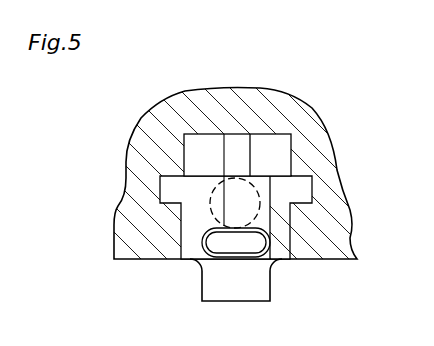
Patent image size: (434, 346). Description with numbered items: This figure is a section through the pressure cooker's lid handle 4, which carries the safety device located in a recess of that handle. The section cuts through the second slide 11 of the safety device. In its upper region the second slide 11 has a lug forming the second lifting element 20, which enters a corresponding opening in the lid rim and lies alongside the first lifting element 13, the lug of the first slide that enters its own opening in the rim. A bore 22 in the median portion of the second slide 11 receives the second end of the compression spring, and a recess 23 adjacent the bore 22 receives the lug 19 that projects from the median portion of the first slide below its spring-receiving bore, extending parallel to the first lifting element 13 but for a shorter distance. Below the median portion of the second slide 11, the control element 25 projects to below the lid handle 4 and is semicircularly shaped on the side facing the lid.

The lid handle 4 is at (343, 212).
The first lifting element 13 is at (285, 158).
The second lifting element 20 is at (192, 152).
The second slide 11 is at (202, 217).
The bore 22 is at (271, 232).
The recess 23 is at (257, 261).
The lug 19 is at (195, 261).
The control element 25 is at (220, 288).